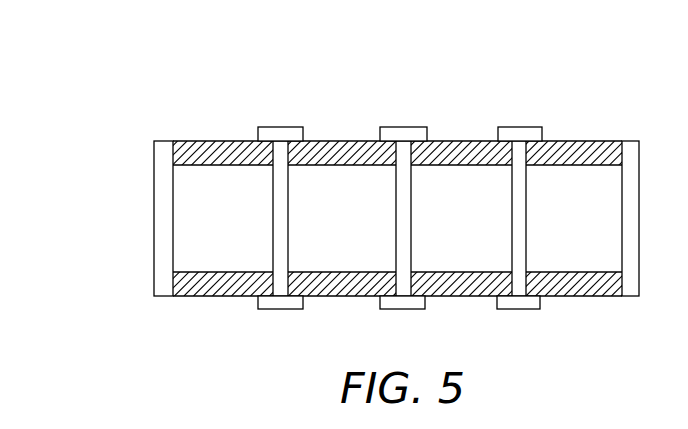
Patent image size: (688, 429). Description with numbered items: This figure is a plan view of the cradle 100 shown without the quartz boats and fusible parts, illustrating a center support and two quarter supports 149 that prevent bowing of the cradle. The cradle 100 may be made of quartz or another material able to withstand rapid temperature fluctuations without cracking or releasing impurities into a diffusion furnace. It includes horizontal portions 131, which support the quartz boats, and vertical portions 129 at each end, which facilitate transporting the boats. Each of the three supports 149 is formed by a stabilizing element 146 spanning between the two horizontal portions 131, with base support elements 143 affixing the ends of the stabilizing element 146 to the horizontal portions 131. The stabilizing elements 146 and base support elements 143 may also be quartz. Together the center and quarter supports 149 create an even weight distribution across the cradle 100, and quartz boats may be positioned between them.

The cradle 100 is at (110, 143).
The vertical portions 129 is at (154, 226).
The horizontal portions 131 is at (577, 141).
The base support elements 143 is at (498, 130).
The stabilizing element 146 is at (288, 221).
The center support and quarter supports 149 is at (432, 64).